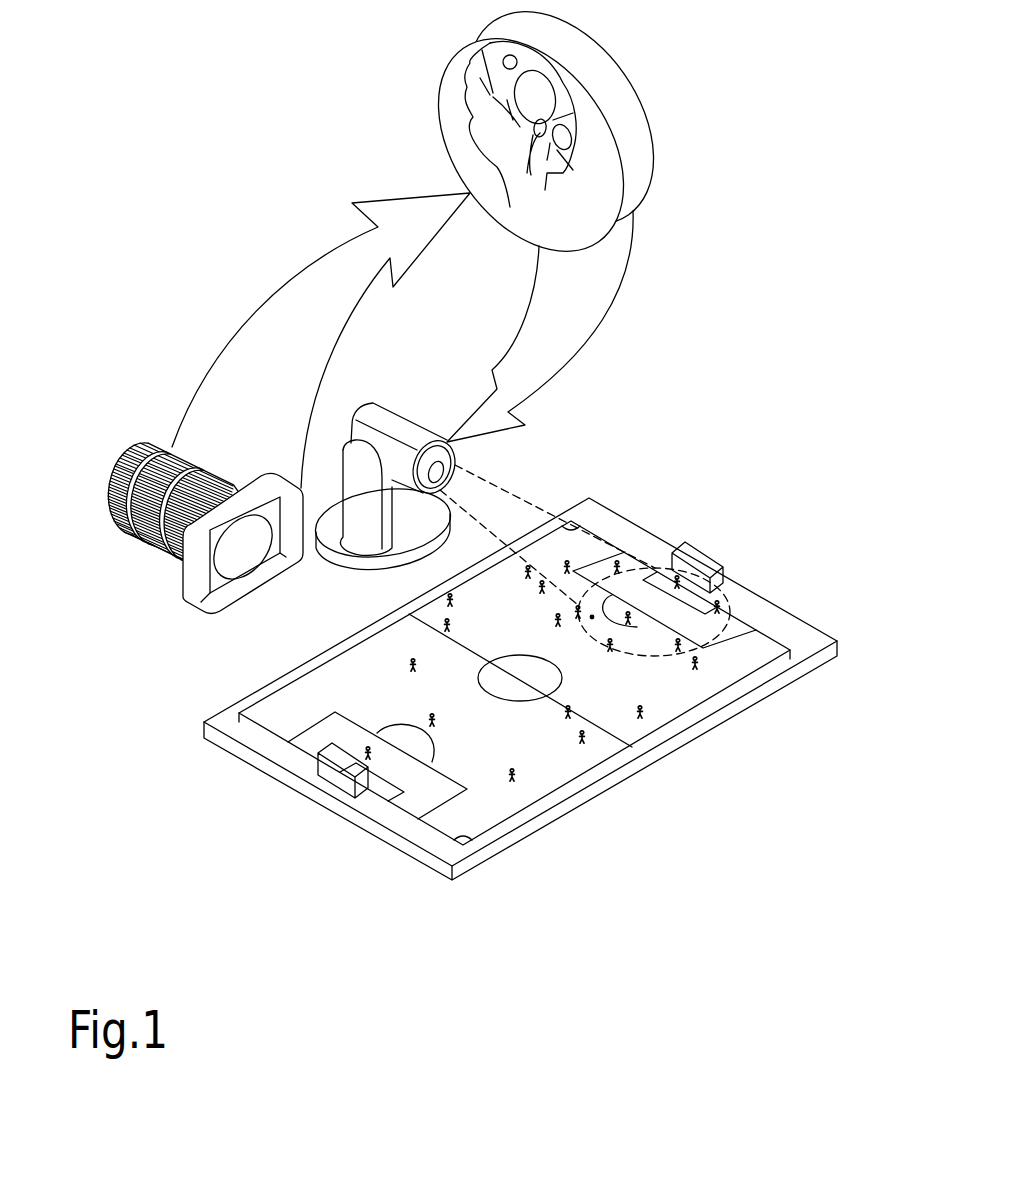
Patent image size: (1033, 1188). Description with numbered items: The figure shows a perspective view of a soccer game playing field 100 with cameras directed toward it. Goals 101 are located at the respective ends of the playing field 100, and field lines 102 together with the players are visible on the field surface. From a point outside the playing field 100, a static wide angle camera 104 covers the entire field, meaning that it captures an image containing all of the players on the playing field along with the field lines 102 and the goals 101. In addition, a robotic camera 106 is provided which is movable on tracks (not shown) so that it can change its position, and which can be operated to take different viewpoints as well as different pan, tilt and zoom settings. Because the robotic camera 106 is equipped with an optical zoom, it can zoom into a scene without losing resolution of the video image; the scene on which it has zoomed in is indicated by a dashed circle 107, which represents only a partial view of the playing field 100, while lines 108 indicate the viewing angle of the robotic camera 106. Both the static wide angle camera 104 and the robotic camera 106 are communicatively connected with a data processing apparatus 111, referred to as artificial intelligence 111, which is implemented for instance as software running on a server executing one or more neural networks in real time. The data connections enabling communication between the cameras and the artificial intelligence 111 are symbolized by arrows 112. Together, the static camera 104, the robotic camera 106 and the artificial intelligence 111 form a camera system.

The playing field 100 is at (520, 708).
The goals 101 is at (698, 552).
The field lines 102 is at (527, 692).
The static wide angle camera 104 is at (125, 455).
The robotic camera 106 is at (403, 416).
The dashed circle 107 is at (658, 657).
The lines 108 is at (538, 507).
The data processing apparatus 111 is at (630, 83).
The arrows 112 is at (592, 305).